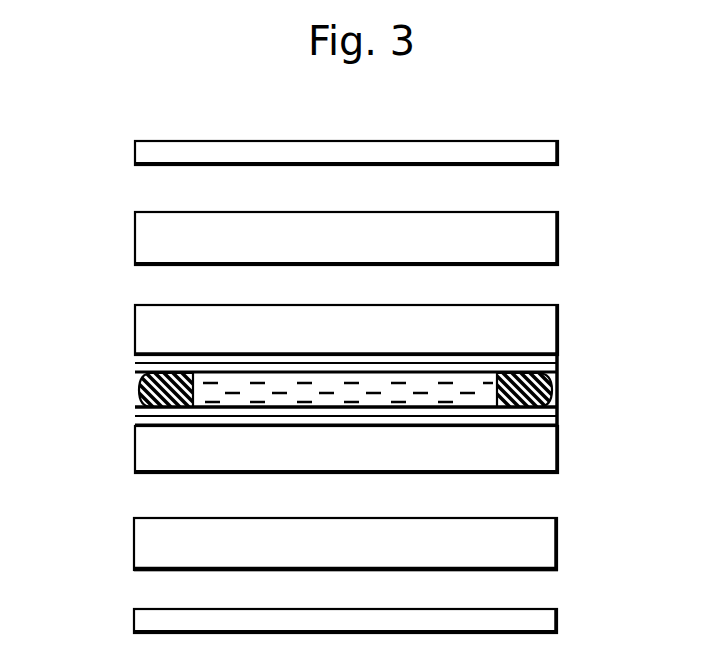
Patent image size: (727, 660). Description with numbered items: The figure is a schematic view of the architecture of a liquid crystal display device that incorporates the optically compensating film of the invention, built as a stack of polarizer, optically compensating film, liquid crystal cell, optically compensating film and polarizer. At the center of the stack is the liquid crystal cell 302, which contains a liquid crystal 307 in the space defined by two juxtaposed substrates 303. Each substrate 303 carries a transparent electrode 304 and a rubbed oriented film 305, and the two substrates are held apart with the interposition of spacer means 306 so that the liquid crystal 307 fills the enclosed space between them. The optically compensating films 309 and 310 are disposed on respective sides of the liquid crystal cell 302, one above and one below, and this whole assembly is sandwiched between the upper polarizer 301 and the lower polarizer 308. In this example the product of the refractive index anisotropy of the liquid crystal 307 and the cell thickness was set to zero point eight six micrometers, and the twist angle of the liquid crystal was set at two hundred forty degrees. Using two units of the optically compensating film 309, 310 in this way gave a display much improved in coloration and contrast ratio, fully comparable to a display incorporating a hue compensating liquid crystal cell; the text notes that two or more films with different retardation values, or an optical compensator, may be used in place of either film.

The upper polarizer 301 is at (548, 153).
The liquid crystal cell 302 is at (344, 398).
The substrate 303 is at (143, 328).
The transparent electrode 304 is at (143, 358).
The rubbed oriented film 305 is at (137, 369).
The spacer means 306 is at (552, 390).
The liquid crystal 307 is at (450, 400).
The lower polarizer 308 is at (542, 625).
The optically compensating film 309 is at (547, 238).
The optically compensating film 310 is at (542, 550).